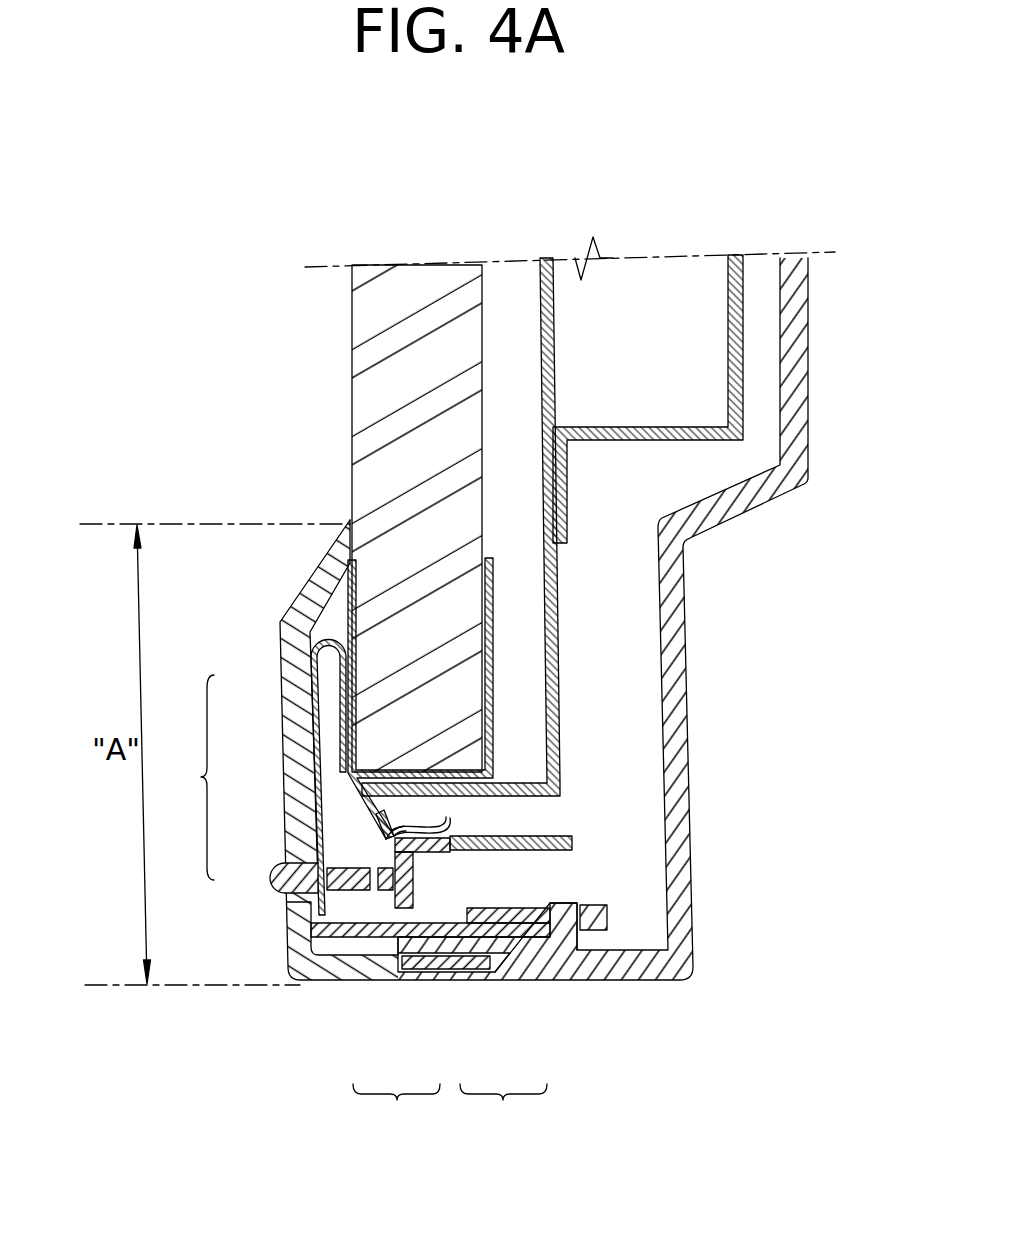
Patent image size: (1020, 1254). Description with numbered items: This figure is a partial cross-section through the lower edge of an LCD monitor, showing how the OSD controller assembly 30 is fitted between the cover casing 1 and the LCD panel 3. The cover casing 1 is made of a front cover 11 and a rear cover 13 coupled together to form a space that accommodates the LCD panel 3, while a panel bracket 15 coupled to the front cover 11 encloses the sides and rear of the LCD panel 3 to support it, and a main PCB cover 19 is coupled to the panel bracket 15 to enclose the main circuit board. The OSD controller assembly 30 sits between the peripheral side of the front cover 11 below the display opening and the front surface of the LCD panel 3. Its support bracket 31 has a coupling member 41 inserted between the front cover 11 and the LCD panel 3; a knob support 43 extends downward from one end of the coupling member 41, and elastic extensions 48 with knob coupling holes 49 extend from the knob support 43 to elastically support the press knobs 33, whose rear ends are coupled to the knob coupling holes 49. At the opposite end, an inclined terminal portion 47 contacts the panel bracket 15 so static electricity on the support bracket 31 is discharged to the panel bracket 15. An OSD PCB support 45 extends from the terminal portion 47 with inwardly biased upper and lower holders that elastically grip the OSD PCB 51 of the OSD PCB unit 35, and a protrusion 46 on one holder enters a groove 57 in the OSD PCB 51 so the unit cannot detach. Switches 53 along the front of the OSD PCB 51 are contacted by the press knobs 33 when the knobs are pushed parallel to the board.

The cover casing 1 is at (516, 1135).
The LCD panel 3 is at (401, 280).
The front cover 11 is at (487, 978).
The rear cover 13 is at (522, 978).
The panel bracket 15 is at (556, 640).
The main PCB cover 19 is at (746, 353).
The OSD controller assembly 30 is at (564, 867).
The support bracket 31 is at (195, 790).
The press knobs 33 is at (280, 890).
The OSD PCB unit 35 is at (415, 1135).
The coupling member 41 is at (346, 683).
The knob support 43 is at (355, 832).
The OSD PCB support 45 is at (384, 836).
The protrusion 46 is at (450, 851).
The terminal portion 47 is at (392, 826).
The elastic extensions 48 is at (337, 893).
The knob coupling hole 49 is at (383, 893).
The OSD PCB 51 is at (438, 853).
The switches 53 is at (398, 905).
The groove 57 is at (450, 830).